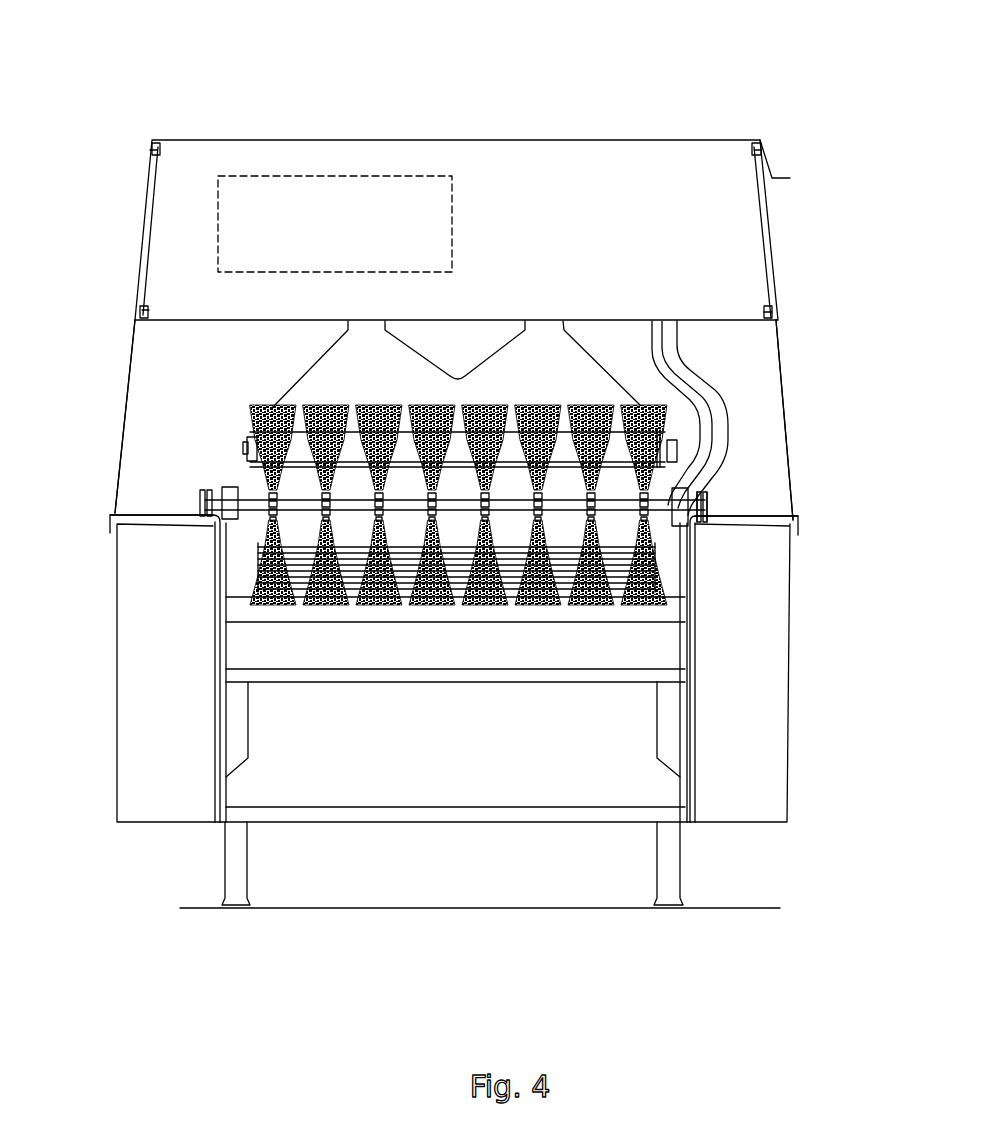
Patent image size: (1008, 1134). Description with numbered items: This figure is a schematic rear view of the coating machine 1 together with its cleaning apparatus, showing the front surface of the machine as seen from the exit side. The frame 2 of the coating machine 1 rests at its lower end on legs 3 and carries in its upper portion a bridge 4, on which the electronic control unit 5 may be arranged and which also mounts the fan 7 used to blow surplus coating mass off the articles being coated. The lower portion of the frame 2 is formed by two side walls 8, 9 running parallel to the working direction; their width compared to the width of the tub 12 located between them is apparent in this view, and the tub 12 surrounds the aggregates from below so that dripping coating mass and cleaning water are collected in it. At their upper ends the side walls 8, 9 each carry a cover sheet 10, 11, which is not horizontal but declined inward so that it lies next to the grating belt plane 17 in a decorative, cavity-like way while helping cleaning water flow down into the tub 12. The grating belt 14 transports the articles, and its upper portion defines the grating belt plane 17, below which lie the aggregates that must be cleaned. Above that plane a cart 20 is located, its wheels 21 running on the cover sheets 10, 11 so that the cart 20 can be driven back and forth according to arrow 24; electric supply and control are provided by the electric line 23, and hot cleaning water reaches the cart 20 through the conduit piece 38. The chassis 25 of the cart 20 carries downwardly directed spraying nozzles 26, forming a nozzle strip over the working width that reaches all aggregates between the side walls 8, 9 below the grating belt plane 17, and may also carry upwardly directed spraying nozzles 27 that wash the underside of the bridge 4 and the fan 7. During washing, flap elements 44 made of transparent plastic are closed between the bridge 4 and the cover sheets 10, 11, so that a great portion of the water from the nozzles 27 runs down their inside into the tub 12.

The coating machine 1 is at (621, 120).
The frame 2 is at (762, 178).
The legs 3 is at (237, 860).
The bridge 4 is at (578, 140).
The electronic control unit 5 is at (298, 175).
The fan 7 is at (545, 363).
The side wall 8 is at (185, 797).
The side wall 9 is at (758, 770).
The cover sheet 10 is at (150, 517).
The cover sheet 11 is at (760, 510).
The tub 12 is at (550, 680).
The grating belt 14 is at (653, 572).
The grating belt plane 17 is at (712, 506).
The cart 20 is at (673, 492).
The wheels 21 is at (198, 502).
The electric line 23 is at (705, 370).
The arrow 24 is at (242, 502).
The chassis 25 is at (262, 484).
The spraying nozzles 26 is at (375, 517).
The spraying nozzles 27 is at (697, 483).
The conduit piece 38 is at (662, 345).
The flap elements 44 is at (123, 410).